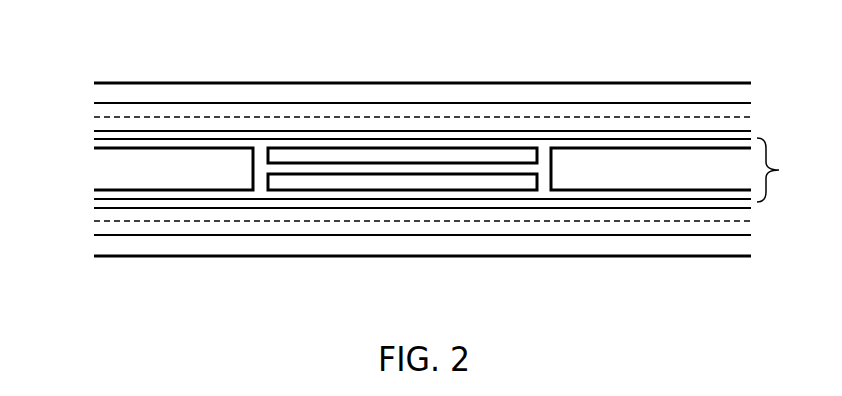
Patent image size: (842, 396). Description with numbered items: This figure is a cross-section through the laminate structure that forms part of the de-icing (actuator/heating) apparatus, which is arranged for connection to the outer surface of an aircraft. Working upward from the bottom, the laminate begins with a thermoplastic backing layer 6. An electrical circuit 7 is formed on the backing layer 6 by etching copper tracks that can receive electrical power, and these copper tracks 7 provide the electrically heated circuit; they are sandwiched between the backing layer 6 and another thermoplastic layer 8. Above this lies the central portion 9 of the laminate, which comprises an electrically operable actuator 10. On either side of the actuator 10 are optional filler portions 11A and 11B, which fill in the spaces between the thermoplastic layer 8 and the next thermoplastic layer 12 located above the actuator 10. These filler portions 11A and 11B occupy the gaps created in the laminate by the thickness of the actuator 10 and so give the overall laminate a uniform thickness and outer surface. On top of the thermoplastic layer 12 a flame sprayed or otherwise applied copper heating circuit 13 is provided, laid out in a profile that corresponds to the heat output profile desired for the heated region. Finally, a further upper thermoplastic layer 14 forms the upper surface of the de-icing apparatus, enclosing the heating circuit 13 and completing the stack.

The upper thermoplastic layer 14 is at (122, 95).
The copper heating circuit 13 is at (692, 123).
The thermoplastic layer 12 is at (94, 132).
The filler portion 11B is at (102, 167).
The electrically operable actuator 10 is at (517, 160).
The filler portion 11A is at (713, 162).
The central portion 9 is at (779, 170).
The thermoplastic layer 8 is at (751, 205).
The electrical circuit 7 is at (727, 222).
The thermoplastic backing layer 6 is at (735, 247).